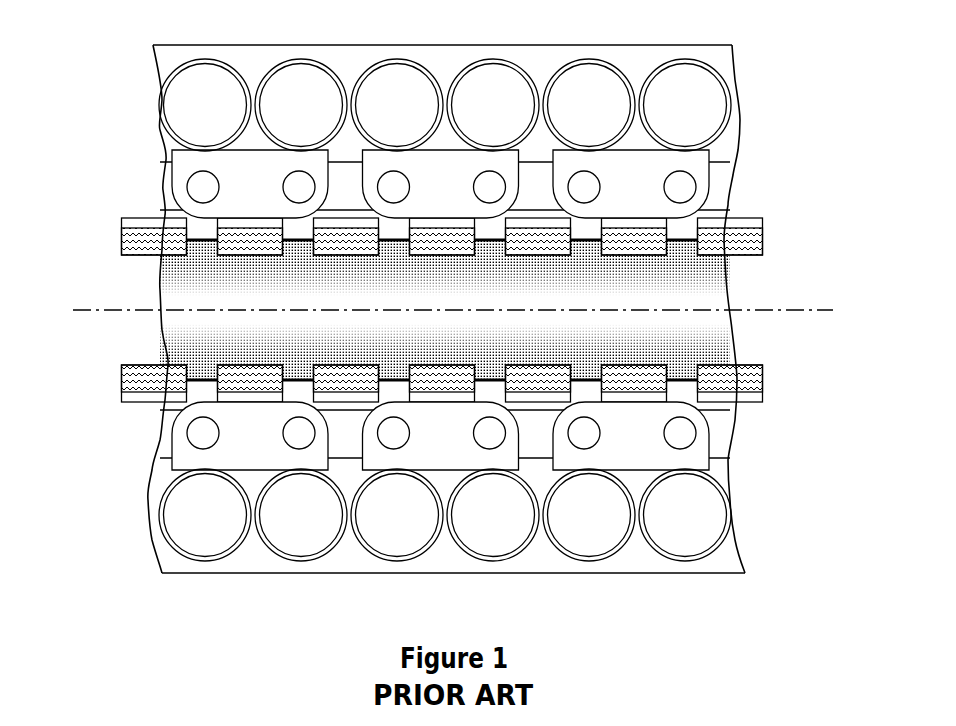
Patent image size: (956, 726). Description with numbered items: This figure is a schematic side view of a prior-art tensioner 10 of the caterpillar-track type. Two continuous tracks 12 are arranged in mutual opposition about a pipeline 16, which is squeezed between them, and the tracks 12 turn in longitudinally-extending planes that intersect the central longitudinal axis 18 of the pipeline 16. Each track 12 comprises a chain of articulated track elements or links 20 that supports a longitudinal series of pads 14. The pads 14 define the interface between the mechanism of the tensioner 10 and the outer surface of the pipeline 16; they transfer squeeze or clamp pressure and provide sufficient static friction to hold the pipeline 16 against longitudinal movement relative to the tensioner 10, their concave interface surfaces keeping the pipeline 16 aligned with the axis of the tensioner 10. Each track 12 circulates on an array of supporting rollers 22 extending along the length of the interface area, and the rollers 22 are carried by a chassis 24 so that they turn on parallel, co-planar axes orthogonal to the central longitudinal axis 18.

The tensioner 10 is at (91, 116).
The continuous track 12 is at (776, 189).
The pad 14 is at (163, 243).
The pipeline 16 is at (705, 288).
The central longitudinal axis 18 is at (112, 310).
The track element or link 20 is at (182, 452).
The supporting roller 22 is at (718, 520).
The chassis 24 is at (718, 57).